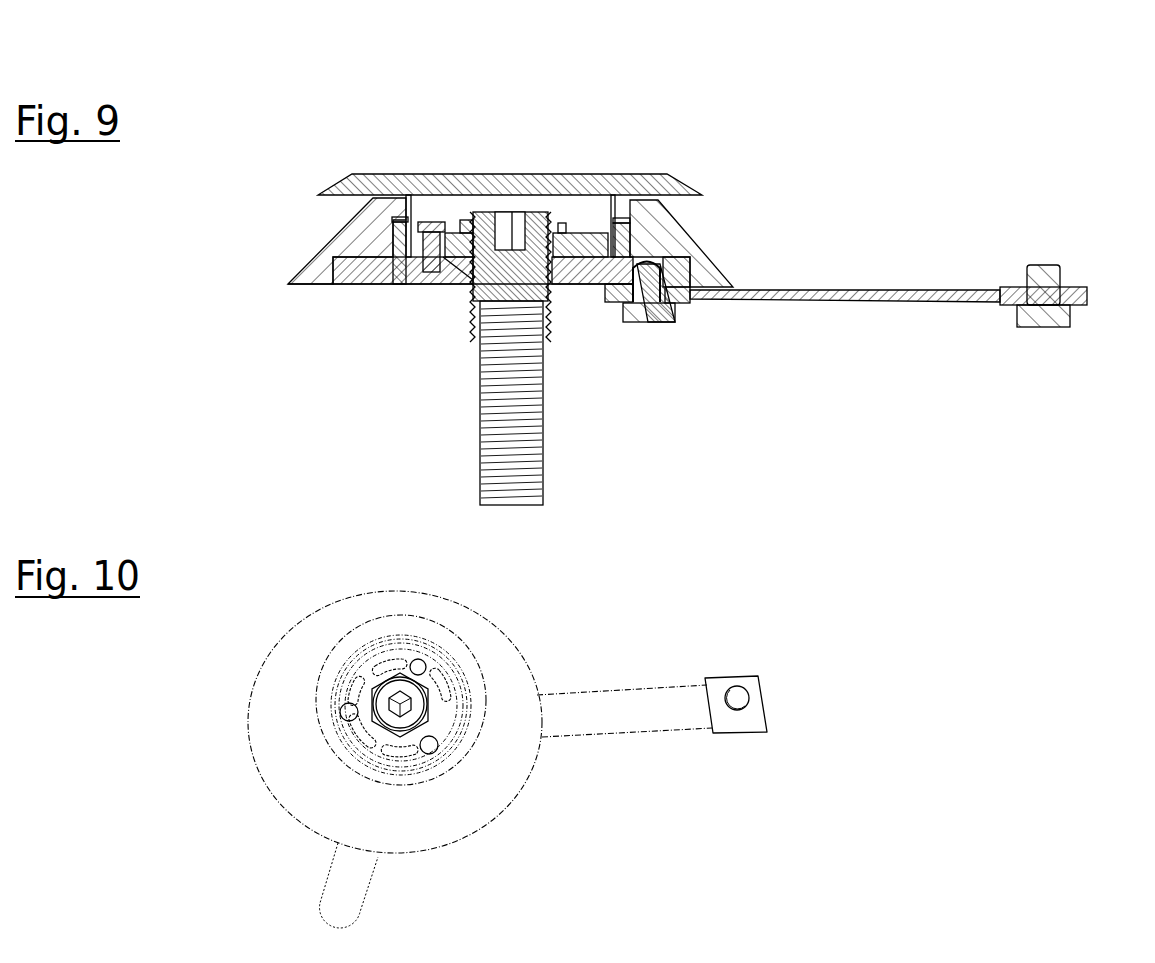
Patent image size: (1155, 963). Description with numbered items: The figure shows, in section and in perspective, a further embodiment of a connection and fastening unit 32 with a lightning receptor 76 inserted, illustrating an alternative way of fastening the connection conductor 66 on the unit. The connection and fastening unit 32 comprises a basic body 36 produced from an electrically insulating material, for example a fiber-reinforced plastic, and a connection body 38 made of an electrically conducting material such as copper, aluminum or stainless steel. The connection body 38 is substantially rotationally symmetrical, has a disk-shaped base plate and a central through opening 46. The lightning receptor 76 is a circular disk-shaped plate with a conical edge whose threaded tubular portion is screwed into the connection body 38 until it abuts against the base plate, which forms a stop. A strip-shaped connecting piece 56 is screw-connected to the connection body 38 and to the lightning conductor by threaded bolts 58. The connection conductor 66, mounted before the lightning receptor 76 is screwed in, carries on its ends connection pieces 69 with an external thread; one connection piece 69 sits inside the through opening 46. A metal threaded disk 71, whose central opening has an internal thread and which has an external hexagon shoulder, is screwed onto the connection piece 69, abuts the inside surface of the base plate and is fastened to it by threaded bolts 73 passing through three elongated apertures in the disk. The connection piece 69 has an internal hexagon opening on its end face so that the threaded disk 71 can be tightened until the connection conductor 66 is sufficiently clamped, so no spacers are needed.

In FIG. 9, the connection and fastening unit 32 is at (748, 132).
In FIG. 9, the basic body 36 is at (680, 250).
In FIG. 10, the basic body 36 is at (478, 810).
In FIG. 9, the connection body 38 is at (388, 275).
In FIG. 9, the through opening 46 is at (560, 290).
In FIG. 9, the strip-shaped connecting piece 56 is at (858, 290).
In FIG. 9, the threaded bolt 58 is at (650, 305).
In FIG. 9, the connection conductor 66 is at (525, 398).
In FIG. 10, the connection conductor 66 is at (342, 873).
In FIG. 9, the connection piece 69 is at (490, 275).
In FIG. 10, the connection piece 69 is at (418, 706).
In FIG. 9, the threaded disk 71 is at (602, 235).
In FIG. 10, the threaded disk 71 is at (363, 668).
In FIG. 9, the threaded bolt 73 is at (433, 222).
In FIG. 10, the threaded bolt 73 is at (348, 710).
In FIG. 9, the lightning receptor 76 is at (558, 175).